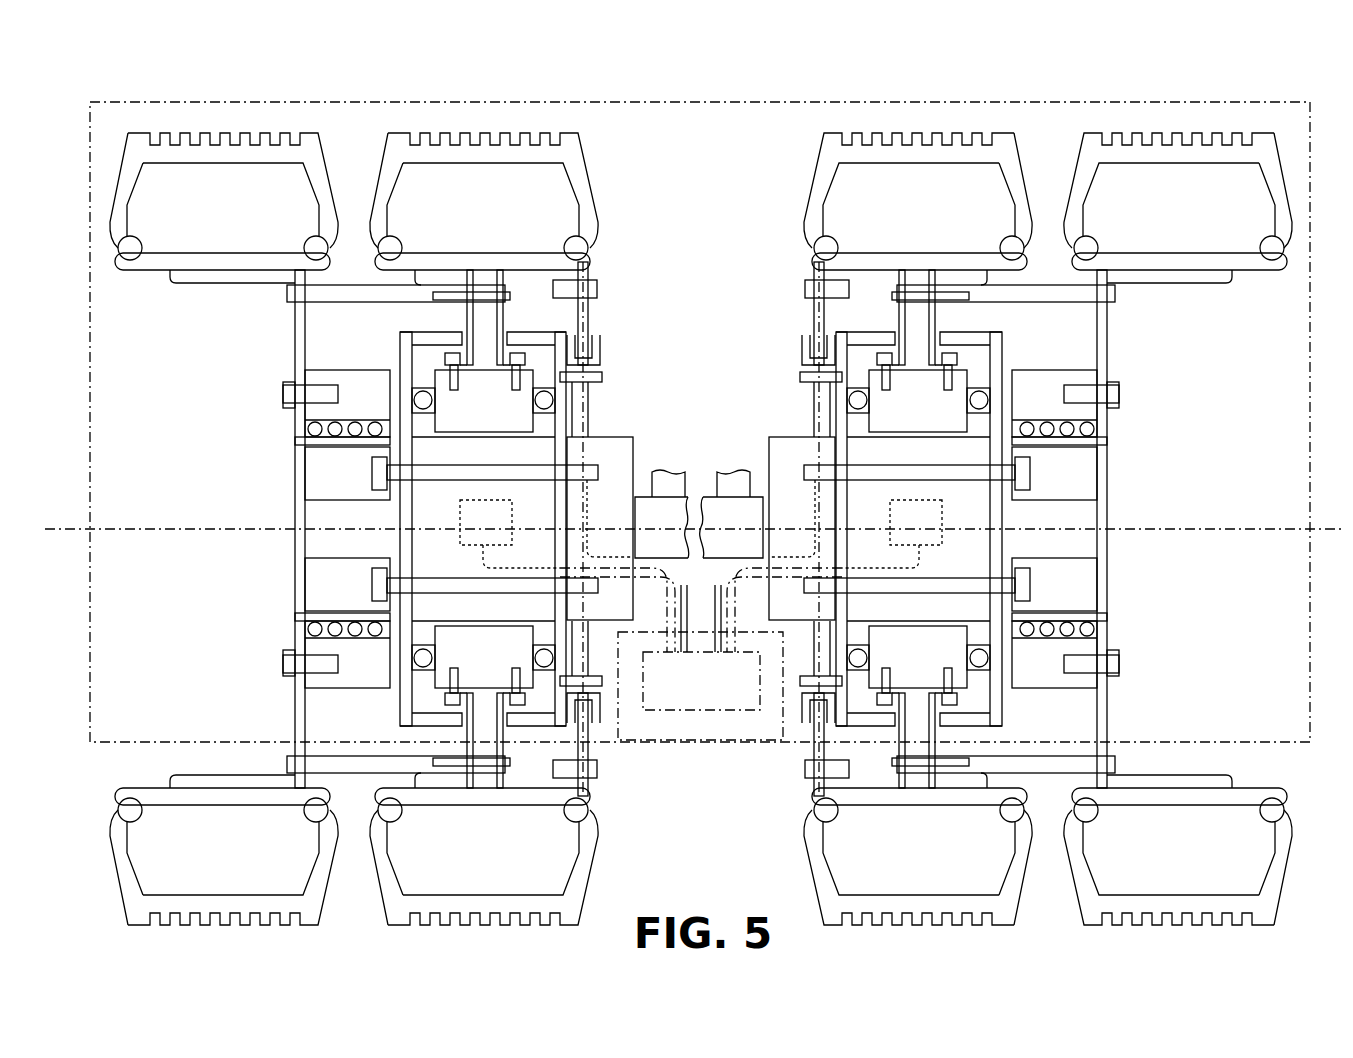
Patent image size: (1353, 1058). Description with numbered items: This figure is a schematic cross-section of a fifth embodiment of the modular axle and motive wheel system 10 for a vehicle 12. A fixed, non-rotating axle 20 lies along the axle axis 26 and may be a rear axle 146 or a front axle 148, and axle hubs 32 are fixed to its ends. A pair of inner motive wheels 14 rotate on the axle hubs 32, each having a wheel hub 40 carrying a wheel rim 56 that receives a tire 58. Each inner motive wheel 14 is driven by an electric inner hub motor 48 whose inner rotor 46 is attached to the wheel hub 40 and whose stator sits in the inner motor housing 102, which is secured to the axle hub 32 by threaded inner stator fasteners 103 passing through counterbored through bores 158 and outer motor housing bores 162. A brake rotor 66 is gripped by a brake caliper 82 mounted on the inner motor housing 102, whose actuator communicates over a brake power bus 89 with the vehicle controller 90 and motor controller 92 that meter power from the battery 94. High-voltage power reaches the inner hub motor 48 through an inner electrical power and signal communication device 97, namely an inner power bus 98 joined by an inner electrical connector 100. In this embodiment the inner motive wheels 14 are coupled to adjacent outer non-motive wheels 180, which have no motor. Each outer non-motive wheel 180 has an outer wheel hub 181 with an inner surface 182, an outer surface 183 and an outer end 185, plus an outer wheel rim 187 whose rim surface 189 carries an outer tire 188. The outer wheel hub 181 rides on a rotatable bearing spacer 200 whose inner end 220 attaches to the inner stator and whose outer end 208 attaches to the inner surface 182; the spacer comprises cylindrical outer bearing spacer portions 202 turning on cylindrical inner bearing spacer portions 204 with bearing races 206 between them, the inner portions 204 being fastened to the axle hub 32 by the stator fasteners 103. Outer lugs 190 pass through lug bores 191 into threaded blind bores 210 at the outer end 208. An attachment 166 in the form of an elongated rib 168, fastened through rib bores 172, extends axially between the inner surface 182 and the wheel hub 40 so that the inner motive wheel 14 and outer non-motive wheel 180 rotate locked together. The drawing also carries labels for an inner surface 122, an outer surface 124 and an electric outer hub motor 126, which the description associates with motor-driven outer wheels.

The modular axle and motive wheel system 10 is at (699, 356).
The vehicle 12 is at (706, 100).
The inner motive wheels 14 is at (735, 147).
The axle 20 is at (648, 495).
The axle axis 26 is at (1319, 529).
The axle hubs 32 is at (625, 430).
The wheel hub 40 is at (760, 528).
The inner rotor 46 is at (492, 365).
The electric inner hub motor 48 is at (594, 730).
The wheel rim 56 is at (662, 536).
The tire 58 is at (594, 158).
The brake rotor 66 is at (701, 307).
The brake caliper 82 is at (606, 357).
The brake power bus 89 is at (645, 550).
The vehicle controller 90 is at (701, 649).
The motor controller 92 is at (700, 722).
The battery 94 is at (700, 725).
The inner electrical power and/or signal communication device 97 is at (701, 654).
The inner power bus 98 is at (701, 654).
The inner electrical connector 100 is at (505, 520).
The inner motor housing 102 is at (515, 720).
The threaded inner stator fasteners 103 is at (442, 594).
The inner surface 122 is at (935, 780).
The outer surface 124 is at (905, 808).
The electric outer hub motor 126 is at (1006, 700).
The rear axle 146 is at (701, 681).
The front axle 148 is at (701, 681).
The counterbored through bores 158 is at (703, 531).
The outer motor housing bores 162 is at (781, 535).
The attachment 166 is at (773, 533).
The elongated rib 168 is at (417, 282).
The rib bores 172 is at (590, 278).
The outer non-motive wheels 180 is at (719, 143).
The outer wheel hubs 181 is at (293, 366).
The inner surfaces 182 is at (695, 529).
The outer surfaces 183 is at (695, 529).
The outer ends 185 is at (1118, 763).
The outer wheel rims 187 is at (150, 272).
The outer tires 188 is at (222, 130).
The rim surfaces 189 is at (232, 270).
The outer lugs 190 is at (689, 411).
The lug bores 191 is at (316, 404).
The rotatable bearing spacers 200 is at (323, 692).
The cylindrical outer bearing spacer portions 202 is at (316, 372).
The cylindrical inner bearing spacer portions 204 is at (305, 515).
The bearing races 206 is at (729, 645).
The outer ends 208 is at (739, 659).
The threaded blind bores 210 is at (318, 672).
The inner ends 220 is at (404, 446).